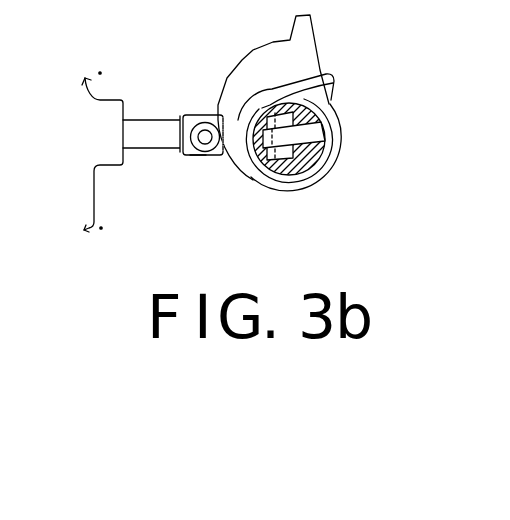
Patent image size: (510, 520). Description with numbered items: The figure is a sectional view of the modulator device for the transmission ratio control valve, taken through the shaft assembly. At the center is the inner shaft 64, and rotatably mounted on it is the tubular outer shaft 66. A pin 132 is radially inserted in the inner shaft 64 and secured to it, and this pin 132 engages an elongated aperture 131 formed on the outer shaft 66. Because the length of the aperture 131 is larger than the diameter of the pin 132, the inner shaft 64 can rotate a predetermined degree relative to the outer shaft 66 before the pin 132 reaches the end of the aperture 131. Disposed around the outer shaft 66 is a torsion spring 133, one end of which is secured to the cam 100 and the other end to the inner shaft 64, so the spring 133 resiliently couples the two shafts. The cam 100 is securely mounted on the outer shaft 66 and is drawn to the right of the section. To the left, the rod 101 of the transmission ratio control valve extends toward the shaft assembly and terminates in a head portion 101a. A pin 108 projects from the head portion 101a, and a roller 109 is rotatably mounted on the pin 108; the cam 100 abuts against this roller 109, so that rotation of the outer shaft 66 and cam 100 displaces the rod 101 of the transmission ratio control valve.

The cam 100 is at (318, 54).
The rod 101 is at (147, 130).
The head portion 101a is at (197, 114).
The pin 108 is at (204, 139).
The roller 109 is at (198, 150).
The elongated aperture 131 is at (302, 110).
The pin 132 is at (322, 130).
The torsion spring 133 is at (339, 159).
The inner shaft 64 is at (259, 168).
The outer shaft 66 is at (313, 163).